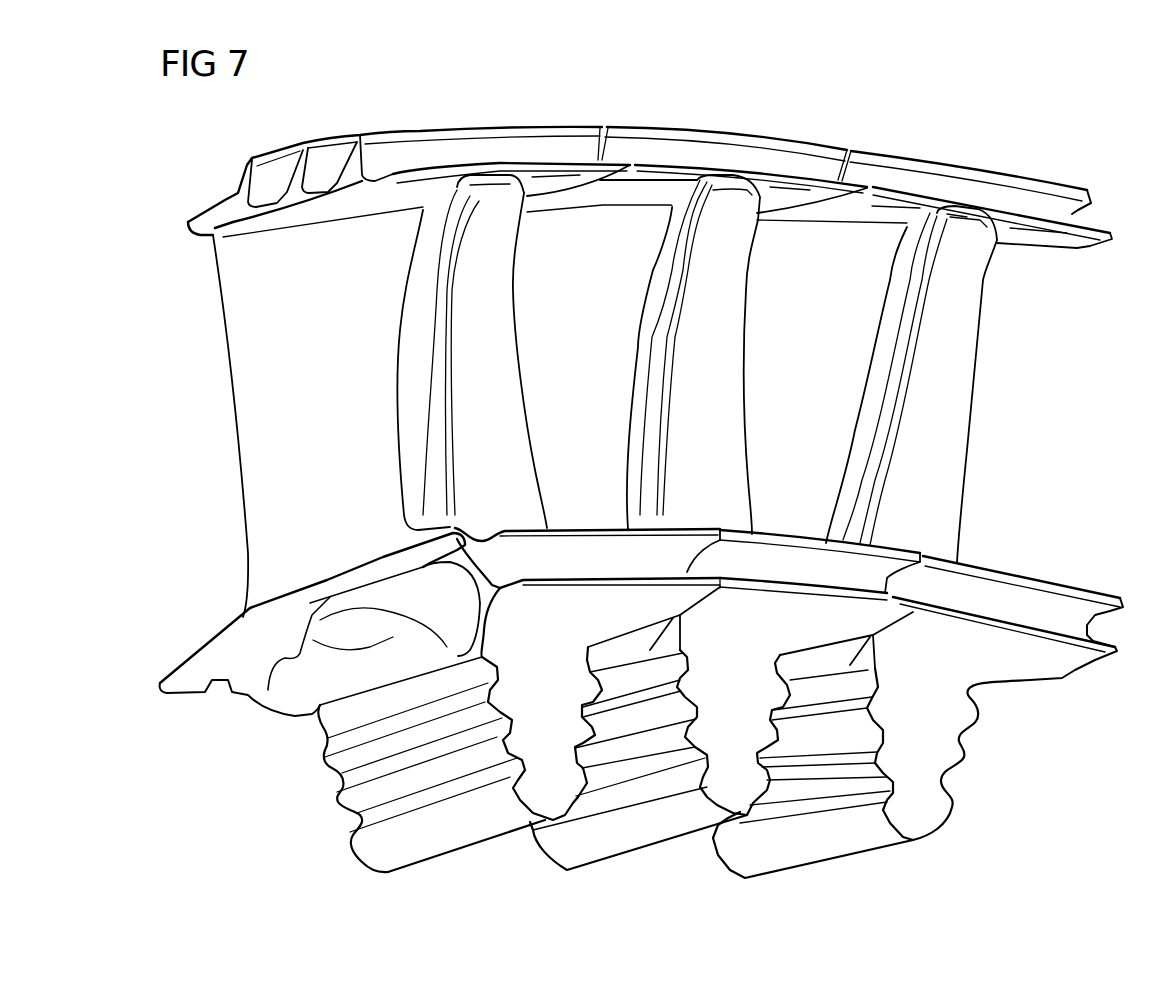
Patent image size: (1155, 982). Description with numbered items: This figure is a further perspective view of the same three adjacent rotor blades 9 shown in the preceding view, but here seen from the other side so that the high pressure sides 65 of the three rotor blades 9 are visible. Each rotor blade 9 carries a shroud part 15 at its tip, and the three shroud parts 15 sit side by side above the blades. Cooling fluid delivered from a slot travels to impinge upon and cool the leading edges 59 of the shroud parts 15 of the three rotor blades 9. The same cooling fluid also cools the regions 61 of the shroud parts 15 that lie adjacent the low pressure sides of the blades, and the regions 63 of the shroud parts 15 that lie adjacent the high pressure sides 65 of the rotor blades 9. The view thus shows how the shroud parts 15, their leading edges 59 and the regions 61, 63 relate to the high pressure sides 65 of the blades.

The rotor blade 9 is at (507, 343).
The shroud part 15 is at (558, 105).
The leading edge 59 is at (490, 178).
The region 61 is at (540, 183).
The region 63 is at (440, 190).
The high pressure side 65 is at (333, 523).